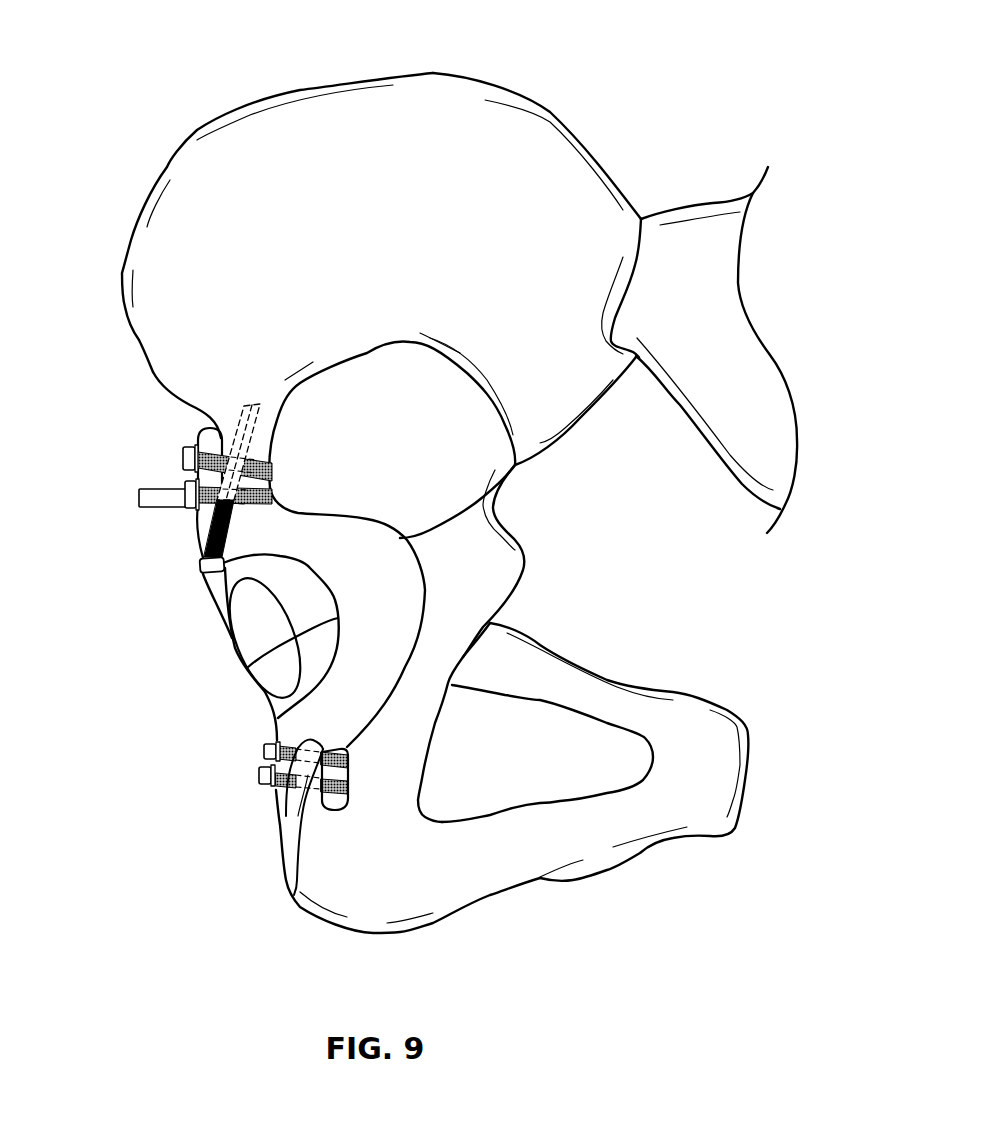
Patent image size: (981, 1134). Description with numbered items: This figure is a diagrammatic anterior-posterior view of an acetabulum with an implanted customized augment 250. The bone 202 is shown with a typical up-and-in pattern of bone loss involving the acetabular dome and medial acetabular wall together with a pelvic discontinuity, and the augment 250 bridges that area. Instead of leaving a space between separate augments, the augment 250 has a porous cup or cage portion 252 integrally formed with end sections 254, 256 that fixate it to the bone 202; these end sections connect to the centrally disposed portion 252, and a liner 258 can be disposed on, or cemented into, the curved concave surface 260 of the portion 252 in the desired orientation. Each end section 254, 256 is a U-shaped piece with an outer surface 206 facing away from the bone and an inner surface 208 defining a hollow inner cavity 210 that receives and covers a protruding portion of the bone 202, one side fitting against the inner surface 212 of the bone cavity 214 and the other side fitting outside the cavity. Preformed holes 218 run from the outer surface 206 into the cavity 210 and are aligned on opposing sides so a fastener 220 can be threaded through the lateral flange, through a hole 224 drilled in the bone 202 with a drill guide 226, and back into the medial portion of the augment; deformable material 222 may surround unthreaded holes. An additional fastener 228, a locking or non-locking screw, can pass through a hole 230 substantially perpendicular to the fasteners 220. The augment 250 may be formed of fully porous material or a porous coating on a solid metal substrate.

The bone 202 is at (518, 84).
The outer surface 206 is at (200, 530).
The inner surface 208 is at (219, 420).
The hollow inner cavity 210 is at (226, 398).
The inner surface of the bone cavity 212 is at (343, 360).
The bone cavity 214 is at (366, 445).
The holes 218 is at (262, 771).
The fastener 220 is at (183, 457).
The deformable material 222 is at (186, 516).
The holes in the bone 224 is at (278, 812).
The drill guide 226 is at (138, 493).
The additional fastener 228 is at (203, 574).
The hole 230 is at (230, 541).
The augment 250 is at (442, 590).
The porous cup or cage portion 252 is at (497, 490).
The end section 254 is at (184, 424).
The end section 256 is at (271, 813).
The liner 258 is at (270, 588).
The curved surface 260 is at (256, 667).